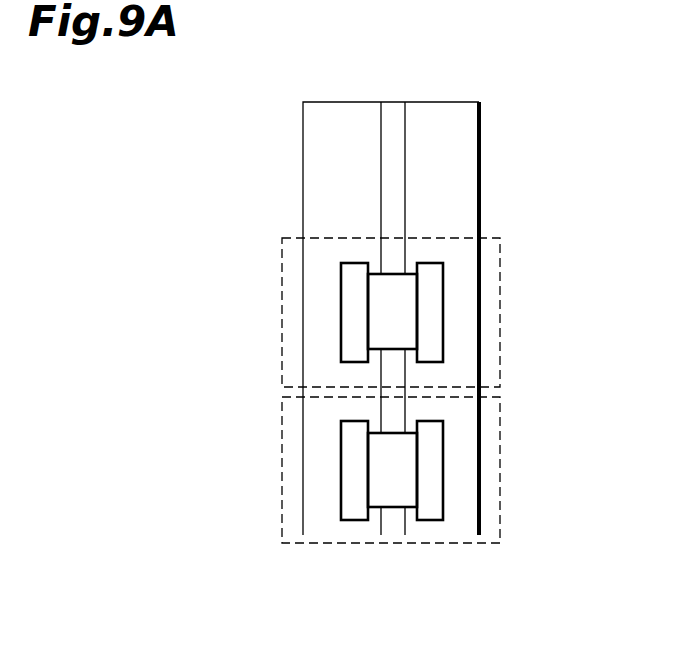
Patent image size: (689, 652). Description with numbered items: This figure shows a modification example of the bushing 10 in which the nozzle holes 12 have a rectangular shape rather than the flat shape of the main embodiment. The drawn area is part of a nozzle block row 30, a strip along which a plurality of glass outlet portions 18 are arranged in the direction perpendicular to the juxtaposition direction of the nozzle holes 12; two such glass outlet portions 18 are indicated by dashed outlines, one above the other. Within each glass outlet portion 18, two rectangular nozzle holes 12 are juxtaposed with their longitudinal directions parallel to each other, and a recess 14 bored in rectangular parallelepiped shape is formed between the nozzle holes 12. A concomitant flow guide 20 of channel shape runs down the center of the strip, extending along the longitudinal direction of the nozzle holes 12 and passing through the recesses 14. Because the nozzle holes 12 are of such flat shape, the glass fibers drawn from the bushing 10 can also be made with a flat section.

The bushing 10 is at (515, 83).
The nozzle block row 30 is at (482, 145).
The concomitant flow guide 20 is at (393, 122).
The glass outlet portion 18 is at (502, 248).
The nozzle hole 12 is at (355, 312).
The recess 14 is at (387, 303).